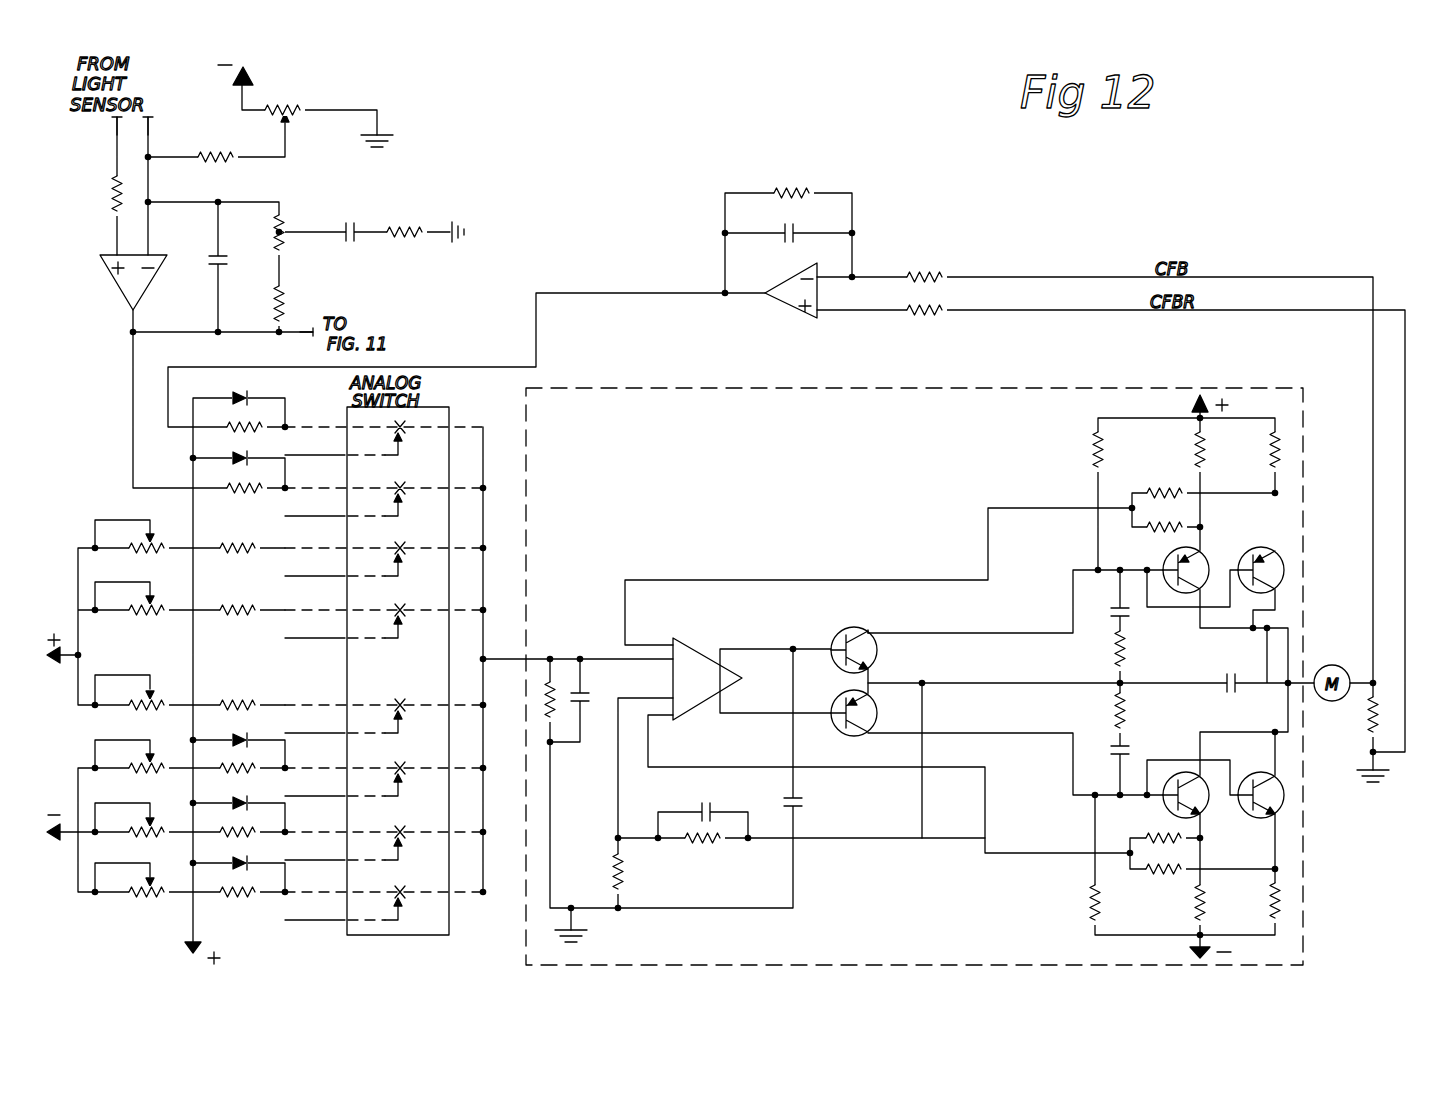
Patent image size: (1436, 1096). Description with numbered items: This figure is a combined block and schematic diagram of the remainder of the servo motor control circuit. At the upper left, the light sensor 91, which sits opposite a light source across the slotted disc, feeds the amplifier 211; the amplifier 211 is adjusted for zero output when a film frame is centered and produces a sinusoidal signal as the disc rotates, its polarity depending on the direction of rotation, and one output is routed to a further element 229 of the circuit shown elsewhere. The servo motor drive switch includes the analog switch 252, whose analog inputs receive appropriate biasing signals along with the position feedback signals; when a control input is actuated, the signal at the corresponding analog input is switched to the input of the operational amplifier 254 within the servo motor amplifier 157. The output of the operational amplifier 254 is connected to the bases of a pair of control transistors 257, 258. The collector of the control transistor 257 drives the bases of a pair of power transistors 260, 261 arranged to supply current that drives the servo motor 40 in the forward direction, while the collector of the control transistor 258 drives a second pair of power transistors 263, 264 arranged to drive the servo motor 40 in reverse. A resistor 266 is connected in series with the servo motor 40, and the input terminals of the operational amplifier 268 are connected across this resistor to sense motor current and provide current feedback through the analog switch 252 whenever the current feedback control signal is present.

The light sensor 91 is at (143, 114).
The connection to FIG. 11 229 is at (342, 324).
The amplifier 211 is at (125, 286).
The operational amplifier 268 is at (790, 302).
The analog switch 252 is at (458, 420).
The amplifier 157 is at (977, 388).
The operational amplifier 254 is at (703, 660).
The control transistor 257 is at (857, 626).
The control transistor 258 is at (852, 724).
The power transistor 260 is at (1208, 555).
The power transistor 261 is at (1288, 566).
The power transistor 263 is at (1210, 803).
The power transistor 264 is at (1286, 797).
The servo motor 40 is at (1332, 662).
The resistor 266 is at (1360, 712).